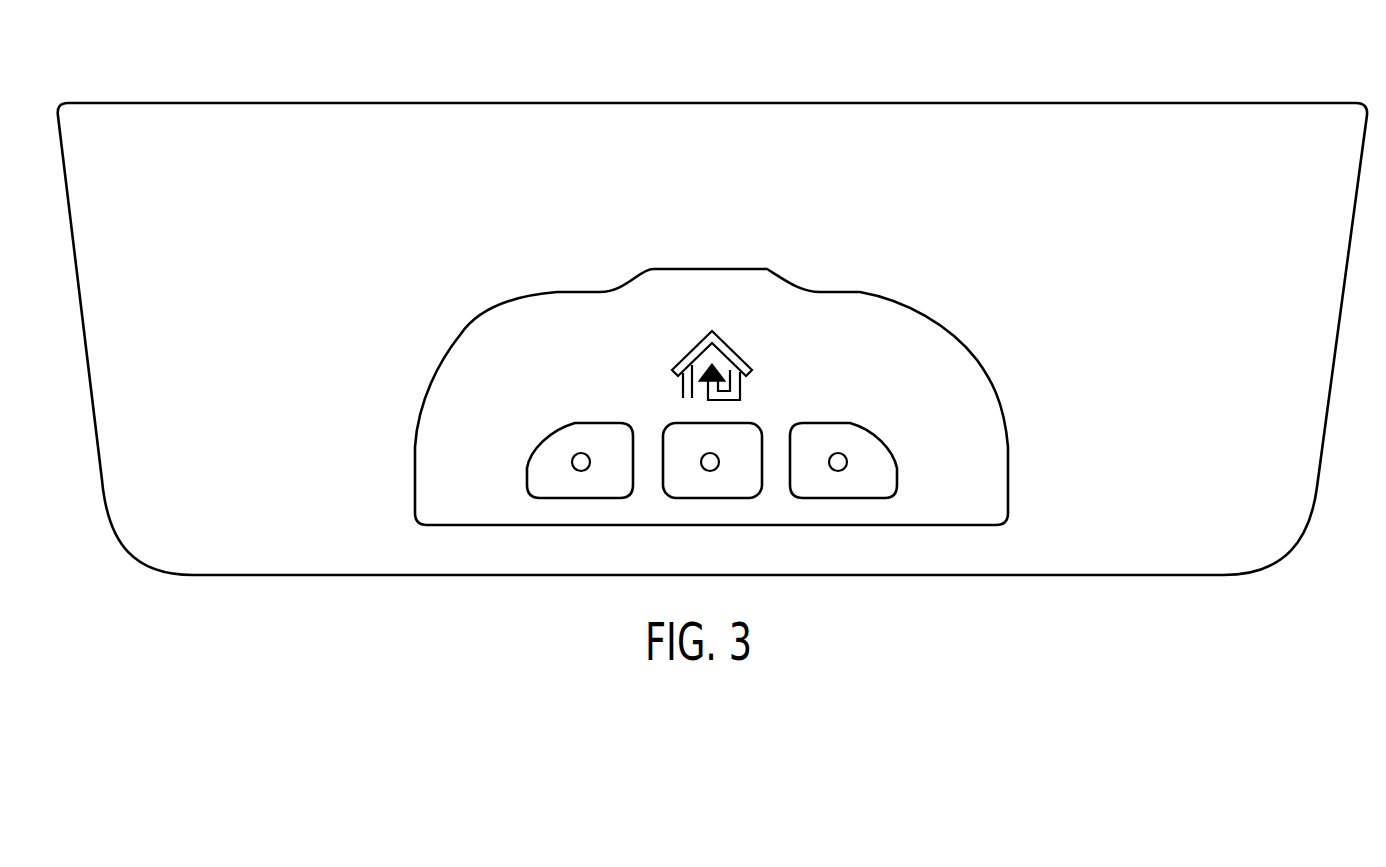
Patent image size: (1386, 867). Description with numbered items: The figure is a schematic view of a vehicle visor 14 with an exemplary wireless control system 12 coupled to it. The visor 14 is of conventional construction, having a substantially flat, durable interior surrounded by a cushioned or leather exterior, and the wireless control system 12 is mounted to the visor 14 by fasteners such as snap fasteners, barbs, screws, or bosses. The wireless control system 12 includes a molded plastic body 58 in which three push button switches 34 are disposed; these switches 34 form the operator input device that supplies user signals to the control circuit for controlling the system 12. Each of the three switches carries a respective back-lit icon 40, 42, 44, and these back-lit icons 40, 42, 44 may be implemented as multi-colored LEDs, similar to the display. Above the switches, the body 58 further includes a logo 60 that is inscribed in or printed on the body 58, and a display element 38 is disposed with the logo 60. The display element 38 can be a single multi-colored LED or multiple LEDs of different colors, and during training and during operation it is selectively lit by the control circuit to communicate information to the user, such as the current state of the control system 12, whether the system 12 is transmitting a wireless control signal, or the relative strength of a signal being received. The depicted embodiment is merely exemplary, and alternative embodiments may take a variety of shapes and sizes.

The visor 14 is at (1109, 102).
The wireless control system 12 is at (742, 269).
The molded plastic body 58 is at (652, 315).
The logo 60 is at (708, 333).
The display element 38 is at (741, 295).
The push button switches 34 is at (797, 424).
The back-lit icon 40 is at (583, 453).
The back-lit icon 42 is at (718, 455).
The back-lit icon 44 is at (845, 455).